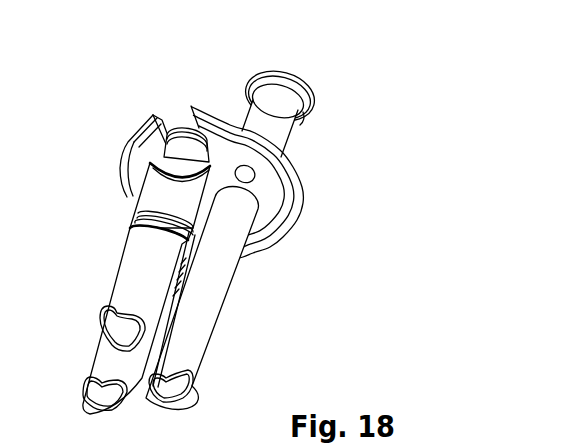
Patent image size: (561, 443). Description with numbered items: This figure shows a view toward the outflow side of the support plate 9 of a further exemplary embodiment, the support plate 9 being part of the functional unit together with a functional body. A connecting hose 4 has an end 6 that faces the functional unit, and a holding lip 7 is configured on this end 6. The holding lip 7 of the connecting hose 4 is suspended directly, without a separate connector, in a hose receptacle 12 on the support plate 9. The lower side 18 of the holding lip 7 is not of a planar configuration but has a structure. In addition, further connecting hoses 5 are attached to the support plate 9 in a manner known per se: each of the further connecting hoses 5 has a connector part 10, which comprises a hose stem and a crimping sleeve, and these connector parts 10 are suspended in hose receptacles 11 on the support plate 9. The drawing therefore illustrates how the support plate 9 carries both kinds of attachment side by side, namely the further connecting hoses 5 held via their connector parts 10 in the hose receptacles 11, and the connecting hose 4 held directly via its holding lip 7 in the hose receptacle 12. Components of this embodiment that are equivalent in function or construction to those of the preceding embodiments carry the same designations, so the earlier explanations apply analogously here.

The connecting hose 4 is at (217, 277).
The further connecting hoses 5 is at (100, 358).
The end 6 is at (172, 84).
The holding lip 7 is at (310, 108).
The support plate 9 is at (266, 221).
The connector part 10 is at (178, 188).
The hose receptacles 11 is at (191, 130).
The hose receptacle 12 is at (265, 200).
The lower side 18 is at (305, 120).